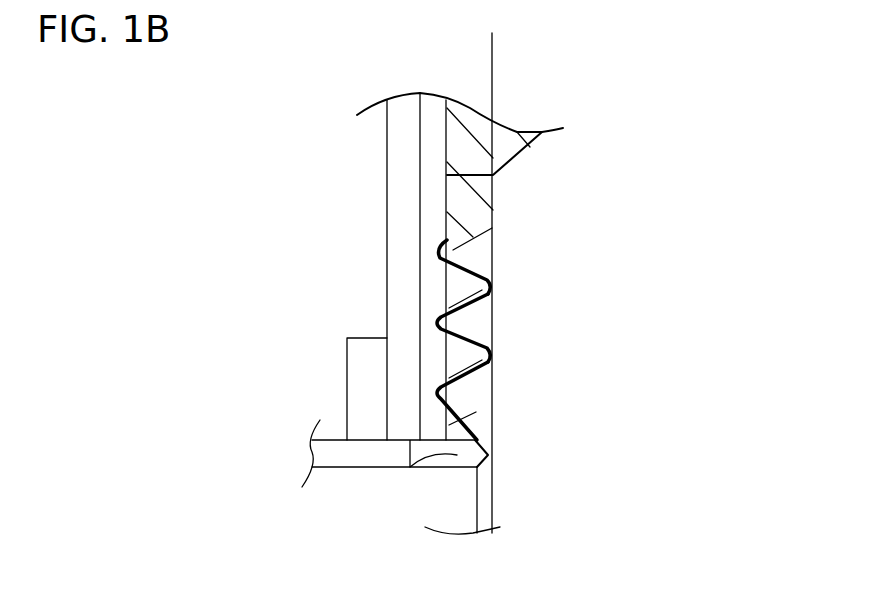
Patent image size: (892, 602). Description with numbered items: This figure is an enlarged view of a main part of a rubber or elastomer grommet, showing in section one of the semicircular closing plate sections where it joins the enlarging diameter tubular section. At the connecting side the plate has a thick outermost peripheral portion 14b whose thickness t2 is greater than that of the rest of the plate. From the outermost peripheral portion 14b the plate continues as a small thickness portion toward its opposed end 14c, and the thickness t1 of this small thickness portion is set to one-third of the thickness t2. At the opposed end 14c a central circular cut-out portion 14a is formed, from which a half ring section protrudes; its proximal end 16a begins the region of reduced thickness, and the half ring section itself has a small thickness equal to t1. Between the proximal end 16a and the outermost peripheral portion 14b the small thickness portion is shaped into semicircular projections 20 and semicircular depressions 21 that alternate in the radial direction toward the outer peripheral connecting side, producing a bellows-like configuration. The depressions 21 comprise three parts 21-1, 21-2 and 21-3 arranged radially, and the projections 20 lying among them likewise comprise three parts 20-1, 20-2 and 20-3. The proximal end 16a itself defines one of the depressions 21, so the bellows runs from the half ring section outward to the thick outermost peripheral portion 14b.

The central circular cut-out portion 14a is at (493, 478).
The outermost peripheral portion 14b is at (467, 207).
The opposed end 14c is at (480, 452).
The proximal end of half ring section 16a is at (410, 467).
The semicircular projection 20 is at (349, 338).
The first projection part 20-1 is at (437, 397).
The second projection part 20-2 is at (437, 325).
The third projection part 20-3 is at (437, 258).
The semicircular depression 21 is at (592, 270).
The first depression part 21-1 is at (571, 407).
The second depression part 21-2 is at (493, 335).
The third depression part 21-3 is at (493, 248).
The thickness of small thickness portion t1 is at (493, 283).
The thickness of outermost peripheral portion t2 is at (493, 100).